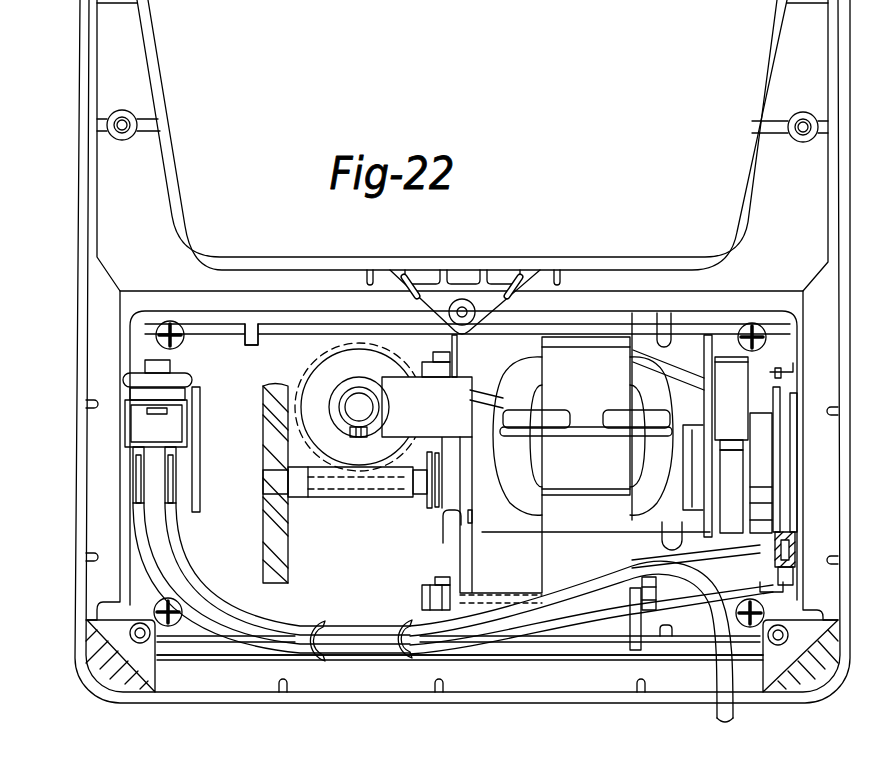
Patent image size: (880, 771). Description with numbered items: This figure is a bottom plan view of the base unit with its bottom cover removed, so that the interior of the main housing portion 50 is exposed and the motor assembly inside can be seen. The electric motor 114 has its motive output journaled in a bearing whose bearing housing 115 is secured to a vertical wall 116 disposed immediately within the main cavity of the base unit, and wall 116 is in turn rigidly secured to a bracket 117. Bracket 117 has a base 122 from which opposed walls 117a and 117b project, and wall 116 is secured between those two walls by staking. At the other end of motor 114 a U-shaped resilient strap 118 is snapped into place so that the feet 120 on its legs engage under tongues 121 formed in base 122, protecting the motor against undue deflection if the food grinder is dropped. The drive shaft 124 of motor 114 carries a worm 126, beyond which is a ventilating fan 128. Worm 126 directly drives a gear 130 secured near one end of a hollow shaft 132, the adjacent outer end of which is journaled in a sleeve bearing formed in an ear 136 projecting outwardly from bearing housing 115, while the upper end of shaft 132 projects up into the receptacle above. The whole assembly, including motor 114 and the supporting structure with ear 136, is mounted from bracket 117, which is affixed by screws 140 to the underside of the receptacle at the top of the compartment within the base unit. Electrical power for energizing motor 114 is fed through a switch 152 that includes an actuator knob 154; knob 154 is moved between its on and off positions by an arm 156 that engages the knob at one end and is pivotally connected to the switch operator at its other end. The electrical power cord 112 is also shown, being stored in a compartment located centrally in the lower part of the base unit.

The main housing portion 50 is at (76, 184).
The electrical power cord 112 is at (713, 670).
The electric motor 114 is at (567, 483).
The bearing housing 115 is at (447, 512).
The vertical wall 116 is at (448, 565).
The bracket 117 is at (233, 330).
The opposed wall 117a is at (530, 330).
The opposed wall 117b is at (532, 643).
The U-shaped resilient strap 118 is at (793, 430).
The feet 120 is at (770, 372).
The tongues 121 is at (770, 368).
The base 122 is at (779, 330).
The drive shaft 124 is at (299, 490).
The worm 126 is at (384, 490).
The ventilating fan 128 is at (270, 445).
The gear 130 is at (316, 383).
The hollow shaft 132 is at (362, 402).
The ear 136 is at (450, 393).
The screws 140 is at (168, 320).
The switch 152 is at (172, 430).
The actuator knob 154 is at (172, 370).
The arm 156 is at (125, 380).